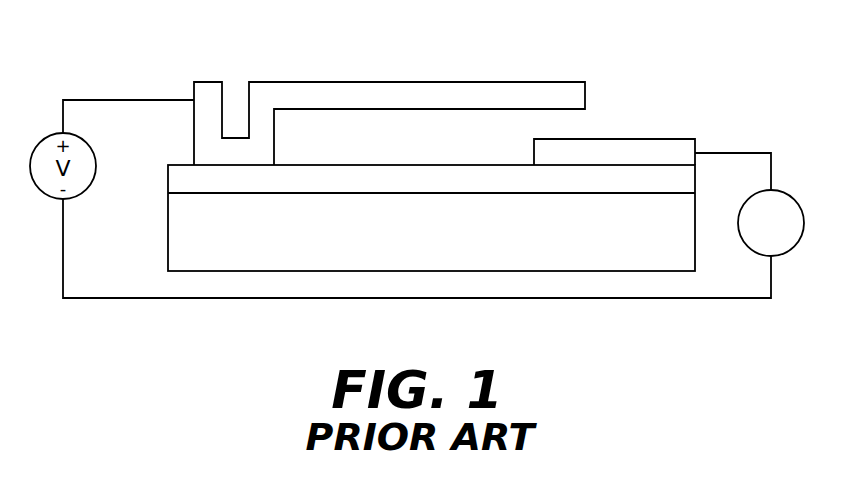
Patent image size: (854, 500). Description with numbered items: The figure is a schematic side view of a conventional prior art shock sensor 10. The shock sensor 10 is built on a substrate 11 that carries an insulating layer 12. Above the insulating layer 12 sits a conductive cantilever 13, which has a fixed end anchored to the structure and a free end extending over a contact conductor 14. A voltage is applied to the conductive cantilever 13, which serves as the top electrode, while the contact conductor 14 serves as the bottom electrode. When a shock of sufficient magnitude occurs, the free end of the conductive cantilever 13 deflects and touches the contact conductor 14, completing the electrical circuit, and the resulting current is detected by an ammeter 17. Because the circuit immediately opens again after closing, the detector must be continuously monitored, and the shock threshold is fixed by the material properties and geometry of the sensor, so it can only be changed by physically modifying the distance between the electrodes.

The shock sensor 10 is at (340, 52).
The substrate 11 is at (168, 222).
The insulating layer 12 is at (380, 165).
The conductive cantilever 13 is at (525, 83).
The contact conductor 14 is at (645, 139).
The ammeter 17 is at (788, 252).